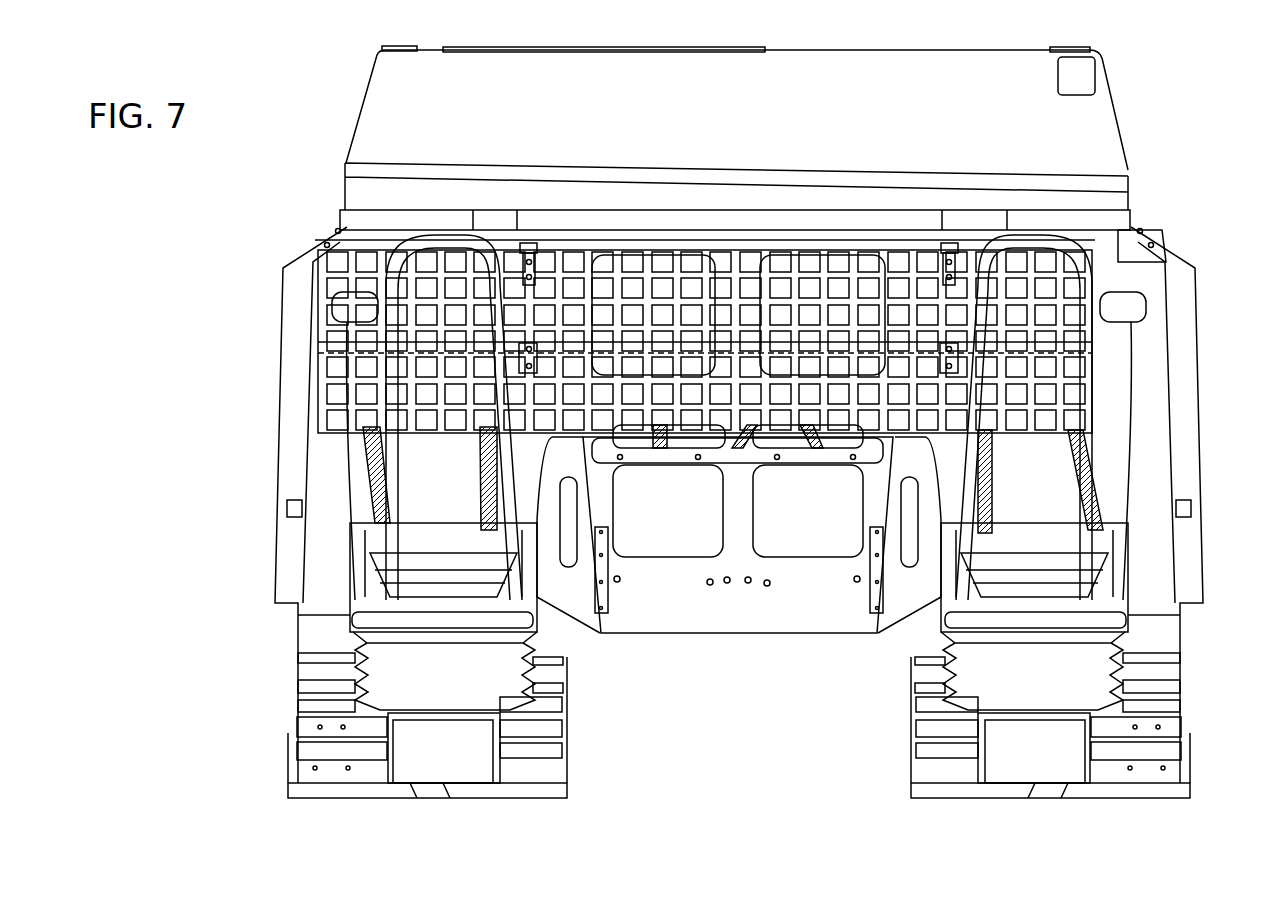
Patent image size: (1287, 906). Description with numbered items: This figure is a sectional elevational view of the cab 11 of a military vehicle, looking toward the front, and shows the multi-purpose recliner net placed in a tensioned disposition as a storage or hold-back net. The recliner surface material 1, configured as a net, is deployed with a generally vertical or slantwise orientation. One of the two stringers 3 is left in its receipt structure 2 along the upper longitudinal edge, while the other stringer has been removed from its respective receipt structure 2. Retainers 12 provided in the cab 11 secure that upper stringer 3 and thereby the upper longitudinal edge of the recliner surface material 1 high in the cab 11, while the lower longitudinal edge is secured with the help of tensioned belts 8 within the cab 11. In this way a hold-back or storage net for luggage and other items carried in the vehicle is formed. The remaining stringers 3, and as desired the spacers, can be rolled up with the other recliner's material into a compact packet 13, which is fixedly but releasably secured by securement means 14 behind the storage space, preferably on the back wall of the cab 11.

The recliner surface material 1 is at (733, 305).
The receipt structures 2 is at (888, 240).
The stringers 3 is at (688, 245).
The tensioned belts 8 is at (385, 492).
The cab 11 is at (1125, 263).
The retainers 12 is at (527, 240).
The packet 13 is at (380, 365).
The securement means 14 is at (527, 347).